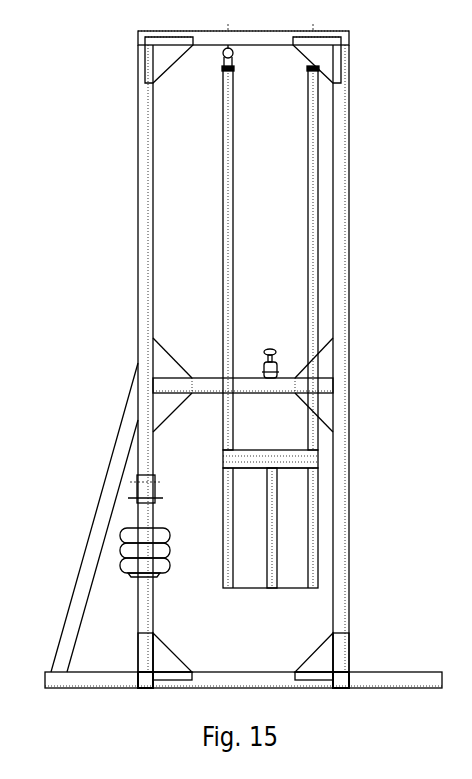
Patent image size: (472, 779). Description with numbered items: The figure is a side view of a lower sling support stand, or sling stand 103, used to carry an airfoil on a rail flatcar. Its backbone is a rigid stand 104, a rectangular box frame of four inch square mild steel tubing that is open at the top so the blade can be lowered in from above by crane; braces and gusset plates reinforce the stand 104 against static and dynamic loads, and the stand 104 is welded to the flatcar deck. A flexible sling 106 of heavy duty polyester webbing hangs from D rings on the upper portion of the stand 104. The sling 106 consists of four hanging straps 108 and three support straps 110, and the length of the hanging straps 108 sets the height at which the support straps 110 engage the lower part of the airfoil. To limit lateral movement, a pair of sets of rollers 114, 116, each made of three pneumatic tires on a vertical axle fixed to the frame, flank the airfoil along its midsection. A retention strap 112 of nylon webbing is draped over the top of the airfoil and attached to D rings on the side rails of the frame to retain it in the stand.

The sling stand 103 is at (82, 240).
The rigid stand 104 is at (138, 83).
The flexible sling 106 is at (223, 461).
The hanging straps 108 is at (223, 156).
The support straps 110 is at (275, 588).
The retention strap 112 is at (275, 350).
The set of rollers 114 is at (120, 550).
The set of rollers 116 is at (145, 550).